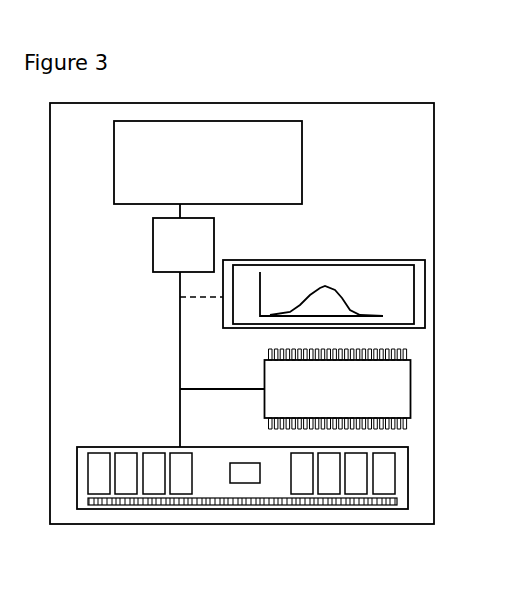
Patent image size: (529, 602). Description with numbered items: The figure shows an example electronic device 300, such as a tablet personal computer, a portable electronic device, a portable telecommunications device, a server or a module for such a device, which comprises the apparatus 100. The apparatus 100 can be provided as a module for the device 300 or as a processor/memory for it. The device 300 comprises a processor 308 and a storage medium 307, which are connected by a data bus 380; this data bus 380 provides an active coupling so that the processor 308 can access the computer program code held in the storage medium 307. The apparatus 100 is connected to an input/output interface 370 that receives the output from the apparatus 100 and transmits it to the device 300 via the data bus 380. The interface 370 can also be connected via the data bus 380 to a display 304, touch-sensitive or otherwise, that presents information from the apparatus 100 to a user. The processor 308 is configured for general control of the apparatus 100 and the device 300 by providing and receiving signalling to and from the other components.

The electronic device 300 is at (115, 539).
The apparatus 100 is at (192, 174).
The input/output interface 370 is at (167, 254).
The data bus 380 is at (177, 355).
The display 304 is at (337, 273).
The processor 308 is at (325, 402).
The storage medium 307 is at (212, 484).